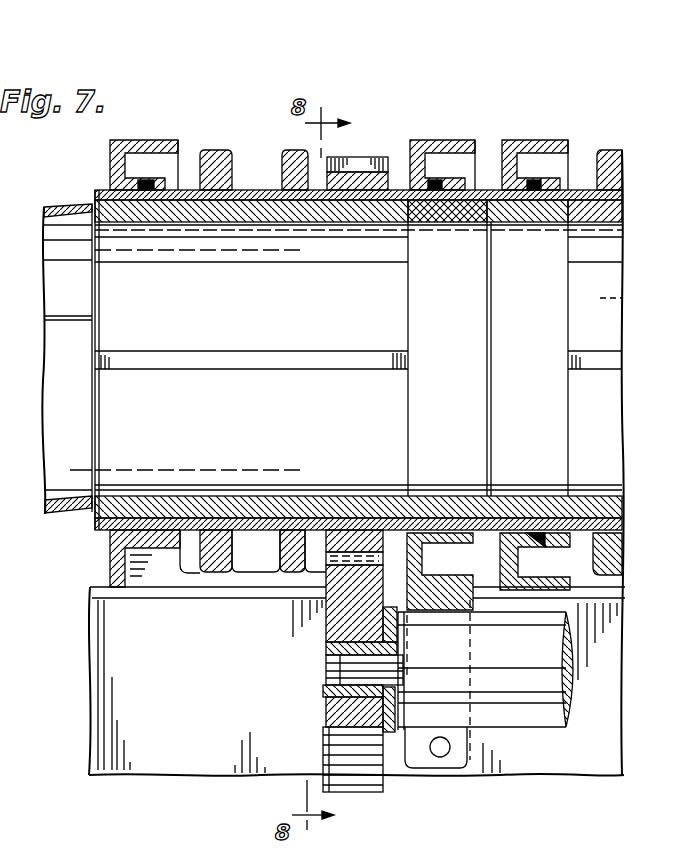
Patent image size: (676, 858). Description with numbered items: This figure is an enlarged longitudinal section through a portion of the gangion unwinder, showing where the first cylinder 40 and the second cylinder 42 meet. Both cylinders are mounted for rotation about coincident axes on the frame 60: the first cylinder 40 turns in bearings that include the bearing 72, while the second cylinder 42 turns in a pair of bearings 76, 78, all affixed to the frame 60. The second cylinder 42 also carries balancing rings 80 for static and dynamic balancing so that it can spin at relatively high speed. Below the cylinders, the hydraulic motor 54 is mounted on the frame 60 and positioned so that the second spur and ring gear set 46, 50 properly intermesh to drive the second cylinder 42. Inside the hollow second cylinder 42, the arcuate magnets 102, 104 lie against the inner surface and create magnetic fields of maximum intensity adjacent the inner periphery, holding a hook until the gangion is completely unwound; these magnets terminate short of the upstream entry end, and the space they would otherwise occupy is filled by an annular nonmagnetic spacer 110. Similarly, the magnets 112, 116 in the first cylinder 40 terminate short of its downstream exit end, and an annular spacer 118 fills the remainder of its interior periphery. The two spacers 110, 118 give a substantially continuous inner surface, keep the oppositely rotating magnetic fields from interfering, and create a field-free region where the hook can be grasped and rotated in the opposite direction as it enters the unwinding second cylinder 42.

The first cylinder 40 is at (622, 190).
The second cylinder 42 is at (93, 195).
The second spur gear 46 is at (360, 172).
The second ring gear 50 is at (333, 742).
The hydraulic motor 54 is at (518, 703).
The frame 60 is at (12, 686).
The bearing 72 is at (535, 182).
The bearing 76 is at (434, 182).
The bearing 78 is at (148, 182).
The balancing rings 80 is at (292, 573).
The magnet 102 is at (276, 327).
The magnet 104 is at (270, 434).
The annular nonmagnetic spacer 110 is at (442, 223).
The magnet 112 is at (610, 273).
The magnet 116 is at (607, 398).
The annular spacer 118 is at (532, 223).